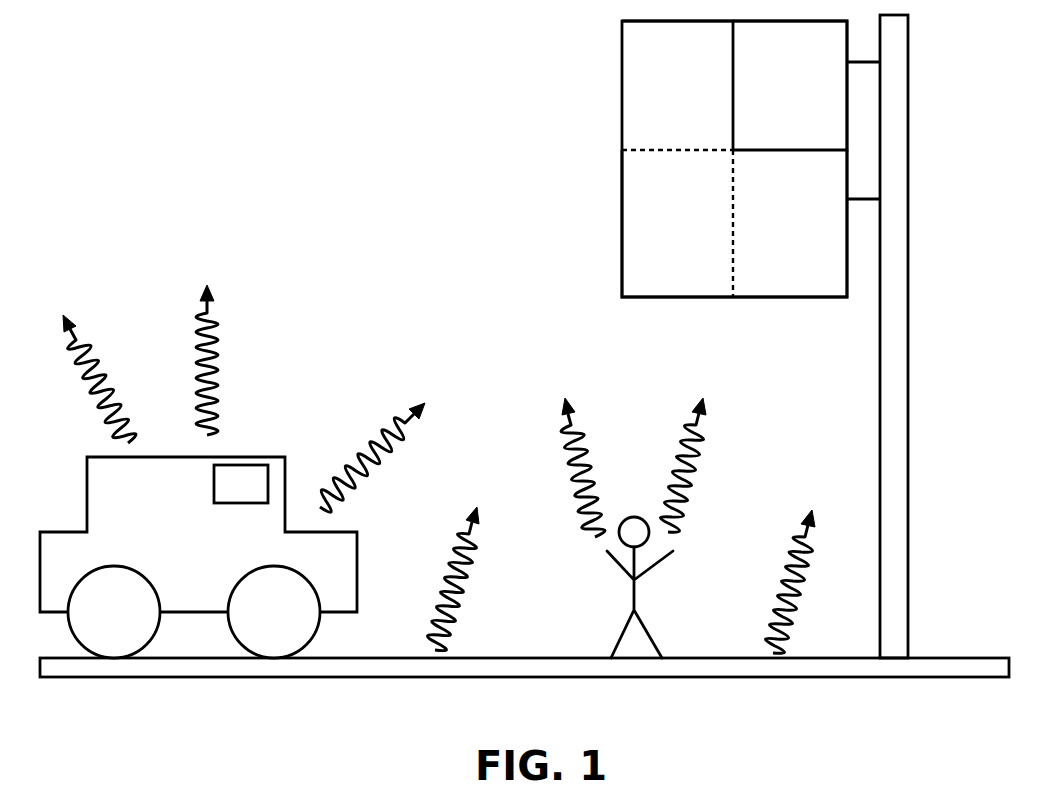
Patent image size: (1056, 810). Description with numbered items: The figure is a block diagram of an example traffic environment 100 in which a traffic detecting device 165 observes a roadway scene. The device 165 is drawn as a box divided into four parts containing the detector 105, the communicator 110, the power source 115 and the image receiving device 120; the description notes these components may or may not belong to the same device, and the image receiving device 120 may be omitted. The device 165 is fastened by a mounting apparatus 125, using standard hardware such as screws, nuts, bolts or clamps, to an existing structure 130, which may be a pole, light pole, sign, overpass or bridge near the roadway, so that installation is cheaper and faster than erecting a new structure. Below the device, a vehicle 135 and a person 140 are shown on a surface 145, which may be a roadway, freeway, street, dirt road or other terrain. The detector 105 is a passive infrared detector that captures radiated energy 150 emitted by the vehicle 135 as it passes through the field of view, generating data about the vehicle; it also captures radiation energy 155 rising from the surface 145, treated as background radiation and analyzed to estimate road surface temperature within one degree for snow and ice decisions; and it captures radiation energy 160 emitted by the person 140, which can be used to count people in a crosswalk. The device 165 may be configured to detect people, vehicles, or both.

The environment 100 is at (134, 84).
The detector 105 is at (659, 109).
The communicator 110 is at (772, 258).
The power source 115 is at (772, 121).
The image receiving device 120 is at (659, 272).
The mounting apparatus 125 is at (876, 91).
The existing structure 130 is at (897, 257).
The vehicle 135 is at (170, 566).
The person 140 is at (660, 617).
The surface 145 is at (785, 670).
The radiated energy 150 is at (100, 381).
The radiation energy 155 is at (448, 597).
The radiation energy 160 is at (587, 474).
The device 165 is at (612, 78).